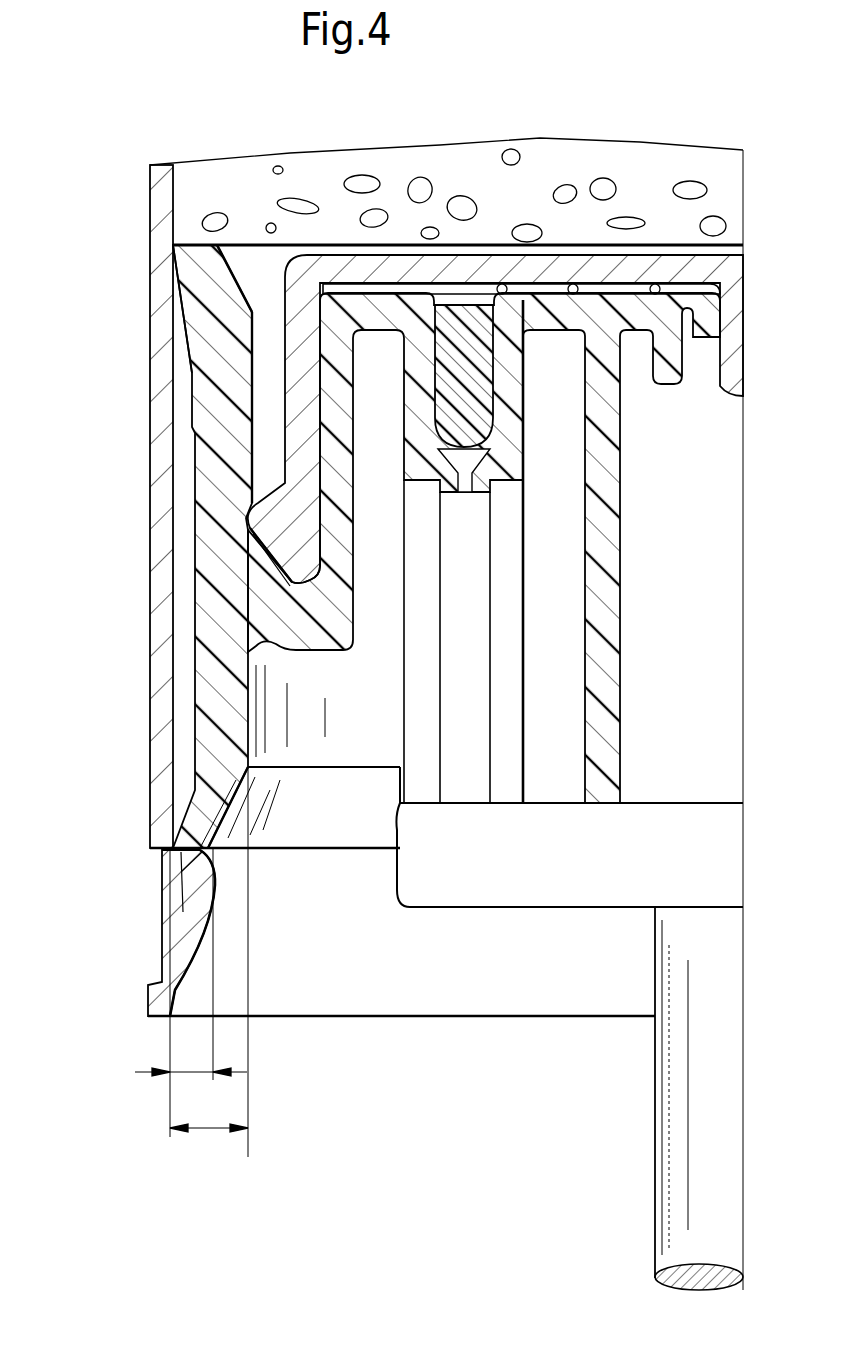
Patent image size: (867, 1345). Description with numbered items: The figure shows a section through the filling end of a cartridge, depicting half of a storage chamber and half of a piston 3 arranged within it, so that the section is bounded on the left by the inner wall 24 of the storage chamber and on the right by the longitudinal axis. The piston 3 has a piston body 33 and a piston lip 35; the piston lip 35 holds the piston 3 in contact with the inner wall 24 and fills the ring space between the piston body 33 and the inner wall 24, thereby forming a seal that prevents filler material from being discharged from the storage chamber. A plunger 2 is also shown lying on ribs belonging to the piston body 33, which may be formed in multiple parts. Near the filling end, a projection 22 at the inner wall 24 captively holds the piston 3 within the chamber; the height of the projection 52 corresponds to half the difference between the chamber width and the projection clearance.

The plunger 2 is at (435, 936).
The piston 3 is at (462, 245).
The projection 22 is at (130, 919).
The inner wall 24 is at (207, 632).
The piston body 33 is at (738, 258).
The piston lip 35 is at (175, 248).
The height of the projection 52 is at (185, 1070).